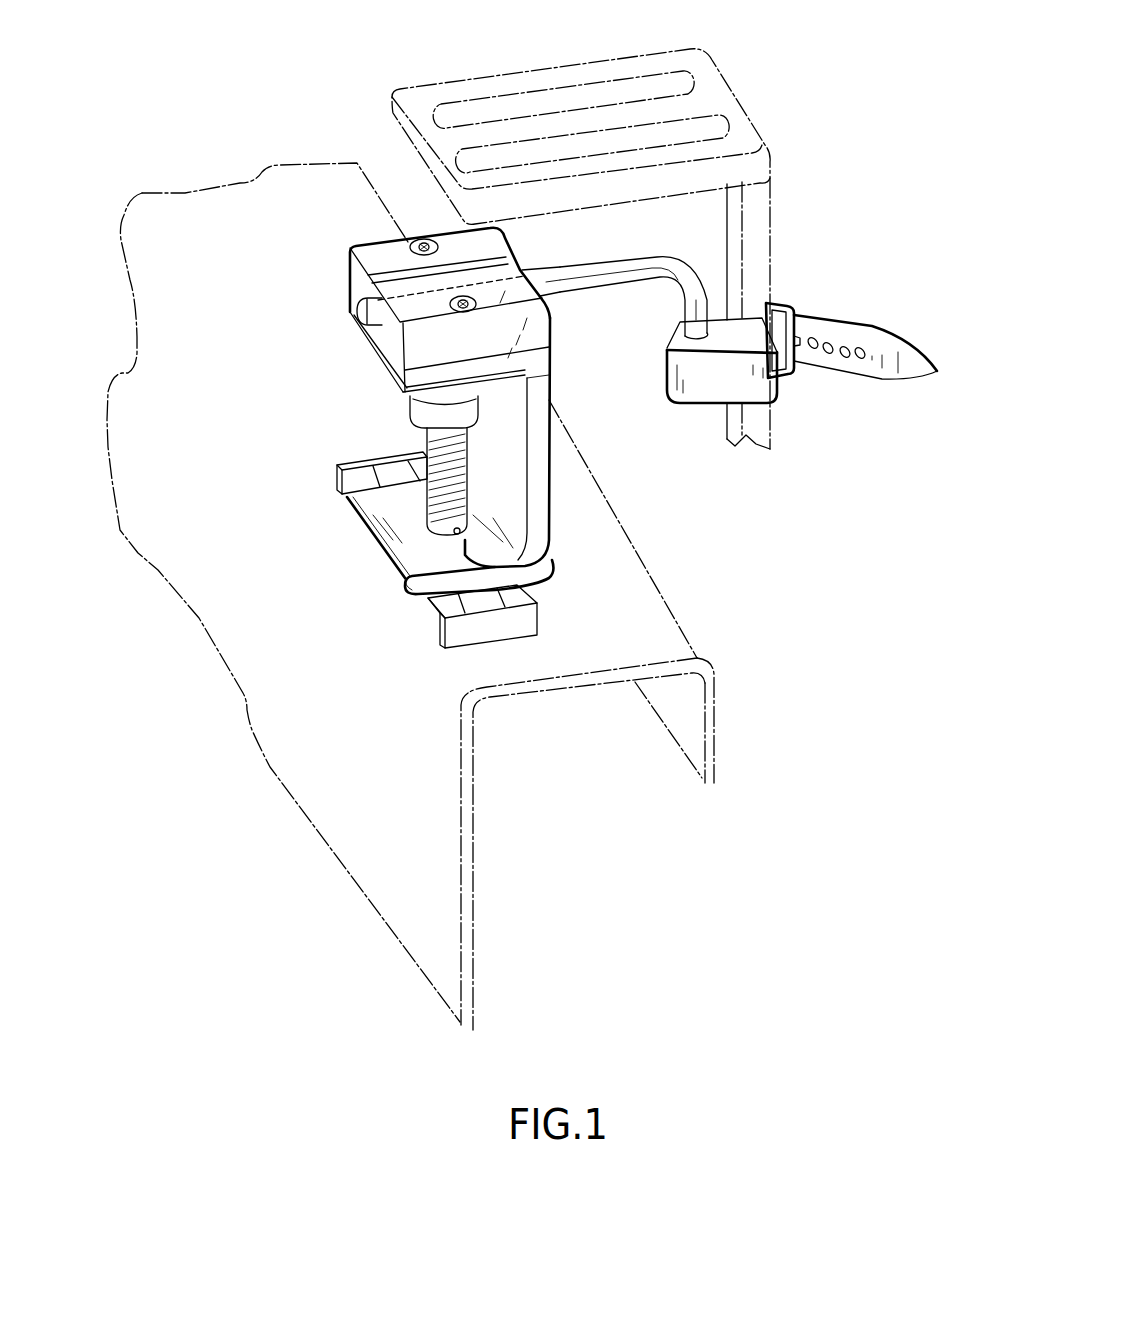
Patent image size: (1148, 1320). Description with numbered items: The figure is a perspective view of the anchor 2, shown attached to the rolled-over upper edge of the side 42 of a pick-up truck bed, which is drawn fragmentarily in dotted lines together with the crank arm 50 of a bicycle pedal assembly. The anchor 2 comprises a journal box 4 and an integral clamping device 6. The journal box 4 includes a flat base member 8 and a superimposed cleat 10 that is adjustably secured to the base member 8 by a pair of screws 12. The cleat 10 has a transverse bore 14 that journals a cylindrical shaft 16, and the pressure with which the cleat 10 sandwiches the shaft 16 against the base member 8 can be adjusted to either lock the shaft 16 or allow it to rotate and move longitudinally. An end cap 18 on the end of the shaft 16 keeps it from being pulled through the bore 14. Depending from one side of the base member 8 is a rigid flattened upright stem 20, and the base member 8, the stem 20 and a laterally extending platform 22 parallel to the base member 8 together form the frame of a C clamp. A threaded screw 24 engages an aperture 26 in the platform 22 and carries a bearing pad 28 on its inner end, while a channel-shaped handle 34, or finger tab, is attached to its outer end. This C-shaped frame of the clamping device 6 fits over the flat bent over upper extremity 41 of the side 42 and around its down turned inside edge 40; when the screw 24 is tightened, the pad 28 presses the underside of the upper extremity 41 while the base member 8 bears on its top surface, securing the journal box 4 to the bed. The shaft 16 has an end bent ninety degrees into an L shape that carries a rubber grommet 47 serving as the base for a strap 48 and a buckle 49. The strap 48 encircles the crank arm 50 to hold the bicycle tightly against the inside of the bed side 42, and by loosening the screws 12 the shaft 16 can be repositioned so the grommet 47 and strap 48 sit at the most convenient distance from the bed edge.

The anchor 2 is at (628, 449).
The journal box 4 is at (347, 348).
The clamping device 6 is at (390, 437).
The base member 8 is at (420, 378).
The cleat 10 is at (372, 257).
The screws 12 is at (462, 302).
The transverse bore 14 is at (529, 276).
The cylindrical shaft 16 is at (568, 280).
The end cap 18 is at (360, 311).
The upright stem 20 is at (544, 518).
The laterally extending platform 22 is at (367, 503).
The threaded screw 24 is at (458, 480).
The aperture 26 is at (480, 550).
The bearing pad 28 is at (457, 398).
The handle 34 is at (495, 628).
The down turned inside edge 40 is at (712, 718).
The flat bent over upper extremity 41 is at (295, 203).
The side 42 is at (381, 857).
The rubber grommet 47 is at (665, 338).
The strap 48 is at (848, 362).
The buckle 49 is at (793, 310).
The crank arm 50 is at (760, 246).